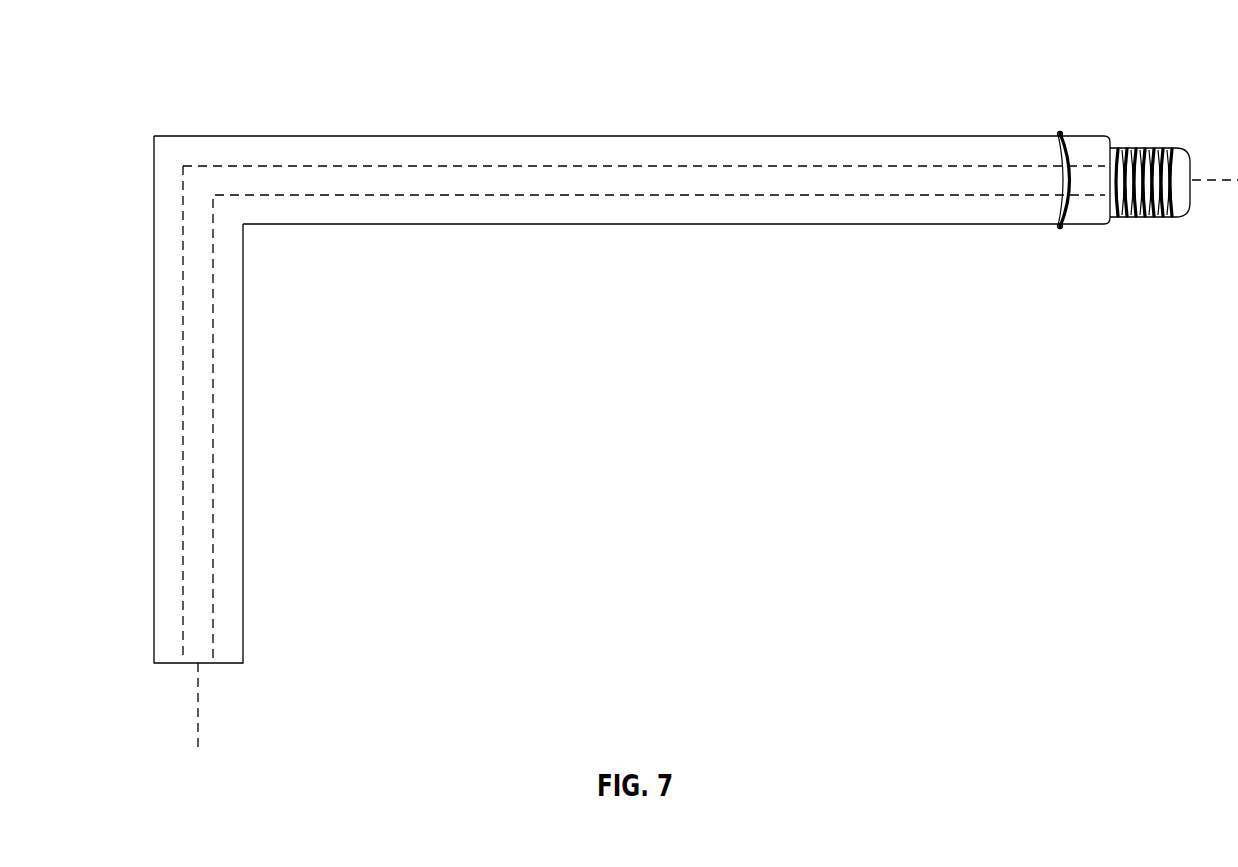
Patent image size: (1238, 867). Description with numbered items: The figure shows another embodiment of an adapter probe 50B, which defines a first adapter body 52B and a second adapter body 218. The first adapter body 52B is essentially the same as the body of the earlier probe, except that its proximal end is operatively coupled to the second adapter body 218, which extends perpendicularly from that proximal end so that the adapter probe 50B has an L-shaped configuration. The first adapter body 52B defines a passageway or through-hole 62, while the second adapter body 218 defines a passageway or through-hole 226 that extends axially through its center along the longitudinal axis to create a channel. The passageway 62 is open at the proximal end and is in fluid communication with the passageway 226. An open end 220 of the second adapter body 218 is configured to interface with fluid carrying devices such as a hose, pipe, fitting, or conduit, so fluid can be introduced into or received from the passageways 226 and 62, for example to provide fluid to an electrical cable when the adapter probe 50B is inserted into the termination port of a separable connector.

The adapter probe 50B is at (659, 385).
The first adapter body 52B is at (557, 130).
The passageway or through-hole 62 is at (819, 164).
The second adapter body 218 is at (247, 445).
The open end 220 is at (221, 676).
The passageway or through-hole 226 is at (182, 399).